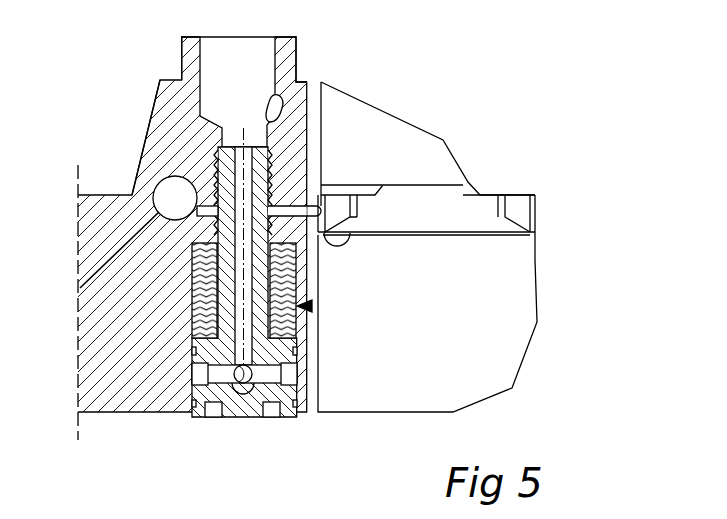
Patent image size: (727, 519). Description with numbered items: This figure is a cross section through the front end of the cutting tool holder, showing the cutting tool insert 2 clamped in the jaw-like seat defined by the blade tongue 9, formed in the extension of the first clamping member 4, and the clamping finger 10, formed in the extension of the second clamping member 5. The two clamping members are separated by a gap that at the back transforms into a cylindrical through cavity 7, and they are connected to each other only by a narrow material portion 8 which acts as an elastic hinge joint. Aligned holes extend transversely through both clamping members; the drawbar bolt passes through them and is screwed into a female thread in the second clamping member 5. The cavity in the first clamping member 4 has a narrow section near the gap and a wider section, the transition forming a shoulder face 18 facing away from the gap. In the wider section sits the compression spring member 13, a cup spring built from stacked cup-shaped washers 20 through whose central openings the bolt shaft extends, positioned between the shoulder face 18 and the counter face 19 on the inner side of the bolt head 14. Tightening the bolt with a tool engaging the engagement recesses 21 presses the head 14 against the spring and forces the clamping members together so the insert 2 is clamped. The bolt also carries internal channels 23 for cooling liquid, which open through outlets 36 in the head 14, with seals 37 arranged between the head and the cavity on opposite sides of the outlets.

The cutting tool insert 2 is at (467, 205).
The first clamping member 4 is at (97, 392).
The second clamping member 5 is at (300, 86).
The through cavity 7 is at (175, 198).
The narrow material portion 8 is at (146, 190).
The blade tongue 9 is at (512, 347).
The clamping finger 10 is at (423, 142).
The compression spring member 13 is at (312, 306).
The head 14 is at (242, 415).
The shoulder face 18 is at (290, 258).
The counter face 19 is at (290, 327).
The cup-shaped washers 20 is at (290, 278).
The engagement recesses 21 is at (270, 408).
The internal channels 23 is at (238, 303).
The outlets 36 is at (193, 375).
The seals 37 is at (193, 352).